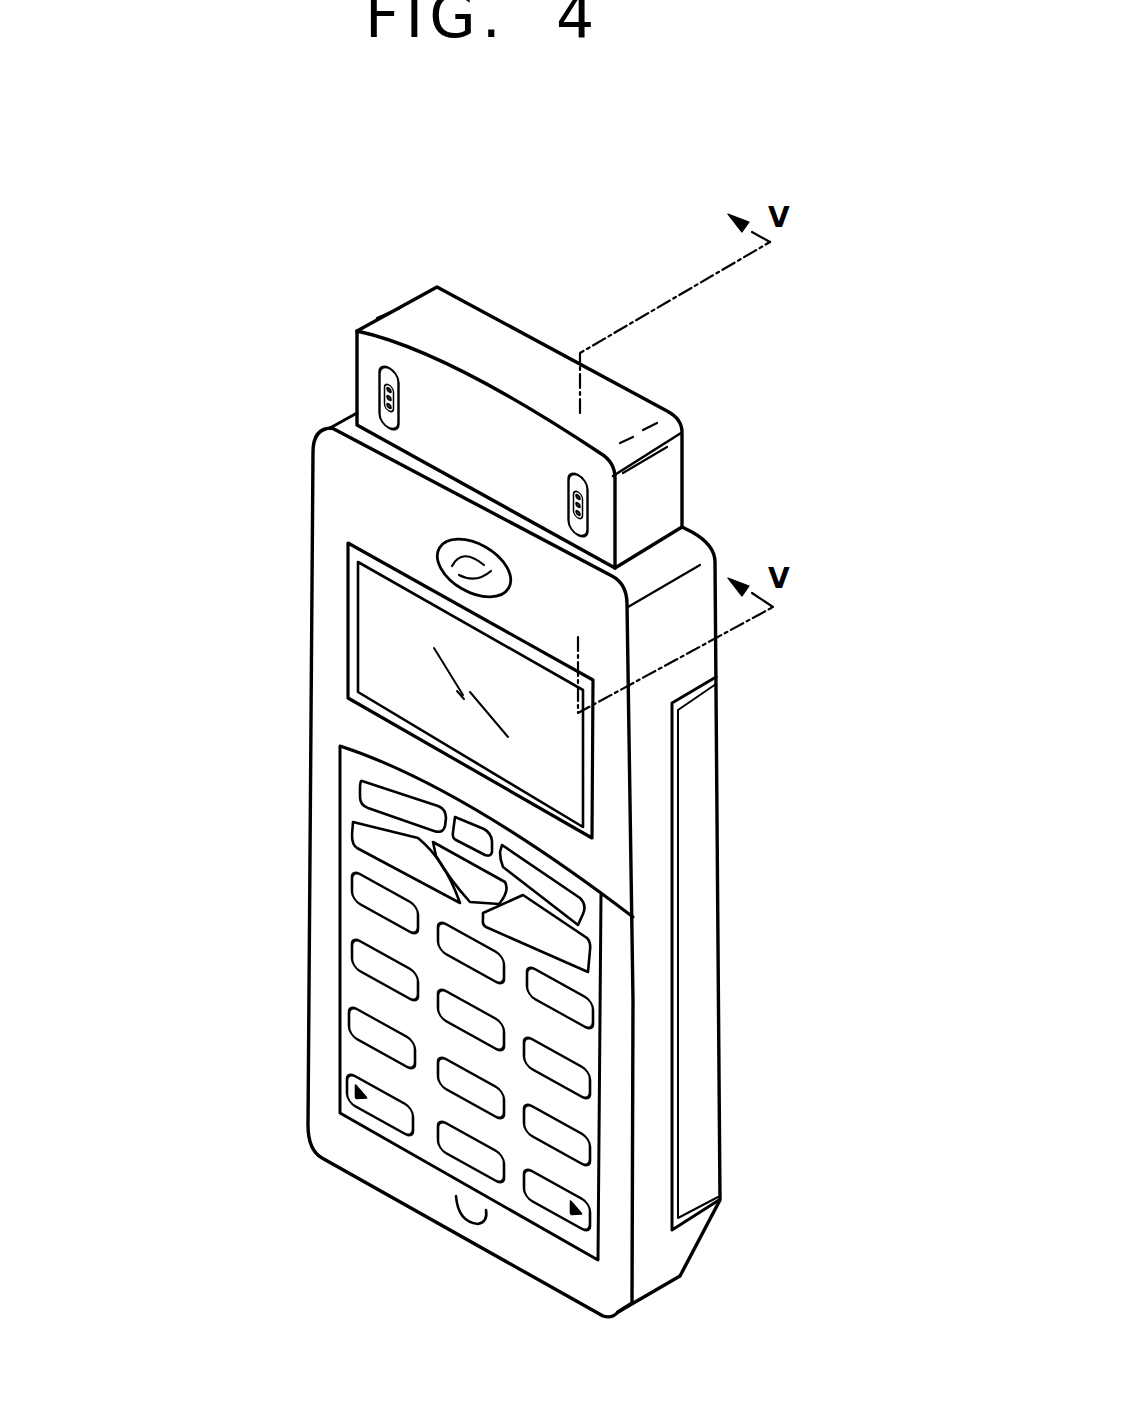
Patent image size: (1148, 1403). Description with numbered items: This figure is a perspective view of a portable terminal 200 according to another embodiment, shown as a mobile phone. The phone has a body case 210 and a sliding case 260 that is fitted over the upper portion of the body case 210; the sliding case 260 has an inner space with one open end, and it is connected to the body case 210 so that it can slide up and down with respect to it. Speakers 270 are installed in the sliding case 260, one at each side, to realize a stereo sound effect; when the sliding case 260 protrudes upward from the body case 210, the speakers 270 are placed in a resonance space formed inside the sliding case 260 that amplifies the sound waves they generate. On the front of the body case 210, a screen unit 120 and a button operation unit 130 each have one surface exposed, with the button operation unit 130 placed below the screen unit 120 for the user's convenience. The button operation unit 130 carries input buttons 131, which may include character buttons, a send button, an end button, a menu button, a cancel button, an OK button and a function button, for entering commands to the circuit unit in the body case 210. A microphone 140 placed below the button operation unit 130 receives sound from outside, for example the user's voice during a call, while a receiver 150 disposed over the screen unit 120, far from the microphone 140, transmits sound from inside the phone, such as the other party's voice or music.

The portable terminal 200 is at (284, 222).
The speakers 270 is at (366, 386).
The sliding case 260 is at (679, 488).
The receiver 150 is at (445, 542).
The screen unit 120 is at (390, 652).
The input buttons 131 is at (370, 830).
The button operation unit 130 is at (312, 925).
The microphone 140 is at (461, 1224).
The body case 210 is at (705, 666).